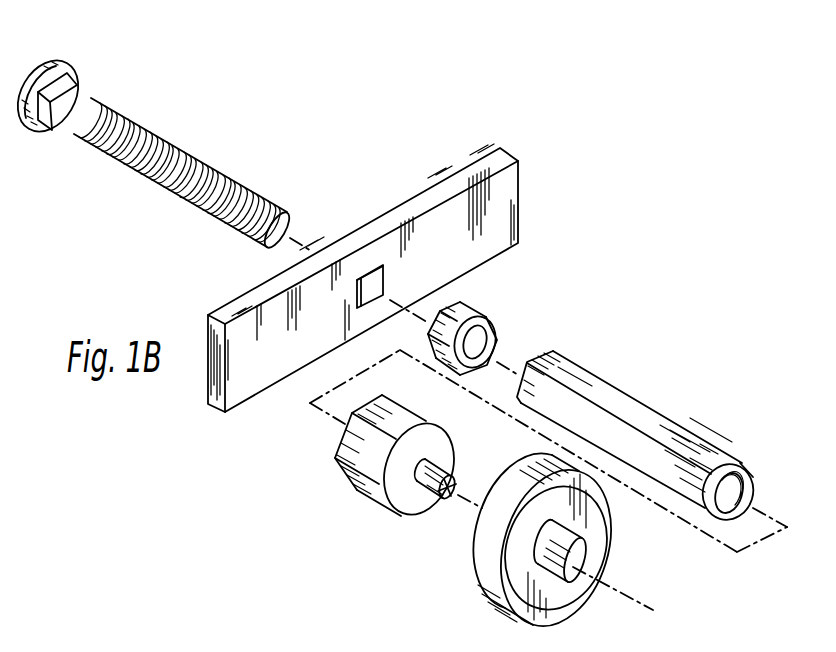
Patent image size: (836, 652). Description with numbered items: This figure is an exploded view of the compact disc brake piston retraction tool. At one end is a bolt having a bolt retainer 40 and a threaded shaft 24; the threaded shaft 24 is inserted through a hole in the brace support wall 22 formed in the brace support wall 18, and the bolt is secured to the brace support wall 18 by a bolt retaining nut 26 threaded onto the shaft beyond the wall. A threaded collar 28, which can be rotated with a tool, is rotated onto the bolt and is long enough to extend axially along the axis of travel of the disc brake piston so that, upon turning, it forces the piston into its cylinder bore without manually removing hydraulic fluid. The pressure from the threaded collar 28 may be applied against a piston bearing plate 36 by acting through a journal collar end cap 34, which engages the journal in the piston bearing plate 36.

The brace support wall 18 is at (423, 197).
The hole in brace support wall 22 is at (349, 330).
The bolt having threaded shaft 24 is at (142, 120).
The bolt retaining nut 26 is at (480, 300).
The threaded collar 28 is at (624, 408).
The journal collar end cap 34 is at (352, 487).
The piston bearing plate 36 is at (480, 563).
The bolt retainer 40 is at (52, 54).